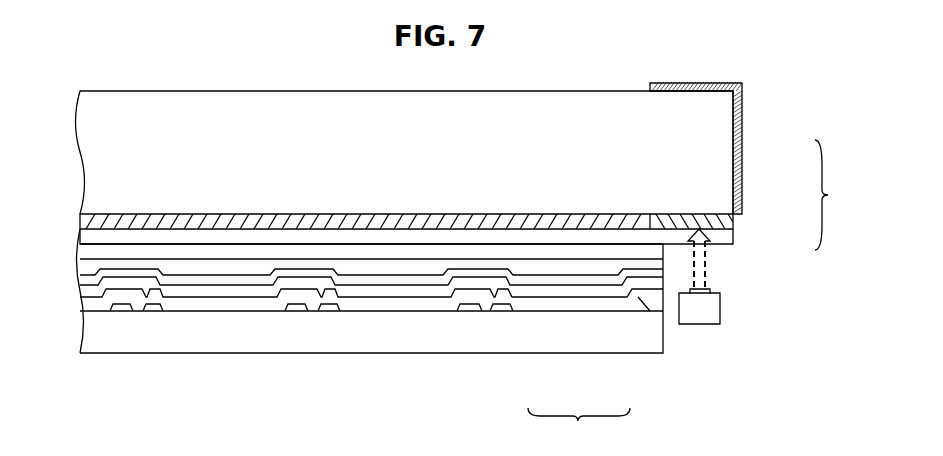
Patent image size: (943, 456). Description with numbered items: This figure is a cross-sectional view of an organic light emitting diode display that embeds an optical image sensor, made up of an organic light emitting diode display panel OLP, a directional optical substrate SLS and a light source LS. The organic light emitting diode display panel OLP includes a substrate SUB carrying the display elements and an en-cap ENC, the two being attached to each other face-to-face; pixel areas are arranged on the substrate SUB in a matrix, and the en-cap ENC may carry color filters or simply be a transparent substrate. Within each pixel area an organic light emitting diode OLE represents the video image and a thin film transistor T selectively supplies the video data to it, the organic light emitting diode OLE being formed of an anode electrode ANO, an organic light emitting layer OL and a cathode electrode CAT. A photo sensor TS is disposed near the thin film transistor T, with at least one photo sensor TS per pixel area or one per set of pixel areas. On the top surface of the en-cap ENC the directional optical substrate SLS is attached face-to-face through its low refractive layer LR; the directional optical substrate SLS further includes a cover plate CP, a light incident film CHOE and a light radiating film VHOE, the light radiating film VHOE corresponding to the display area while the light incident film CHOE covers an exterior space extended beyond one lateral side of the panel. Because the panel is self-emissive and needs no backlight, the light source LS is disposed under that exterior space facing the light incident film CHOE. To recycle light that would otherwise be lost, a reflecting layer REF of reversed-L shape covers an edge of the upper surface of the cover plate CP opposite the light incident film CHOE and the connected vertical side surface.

The reflecting layer REF is at (738, 110).
The cover plate CP is at (722, 147).
The light radiating film VHOE is at (640, 215).
The light incident film CHOE is at (724, 220).
The low refractive layer LR is at (724, 237).
The directional optical substrate SLS is at (837, 195).
The light source LS is at (718, 306).
The organic light emitting diode display panel OLP is at (70, 230).
The substrate SUB is at (216, 343).
The en-cap ENC is at (383, 253).
The cathode electrode CAT is at (603, 276).
The organic light emitting layer OL is at (575, 286).
The anode electrode ANO is at (542, 298).
The organic light emitting diode OLE is at (579, 424).
The photo sensor TS is at (119, 311).
The thin film transistor T is at (152, 311).